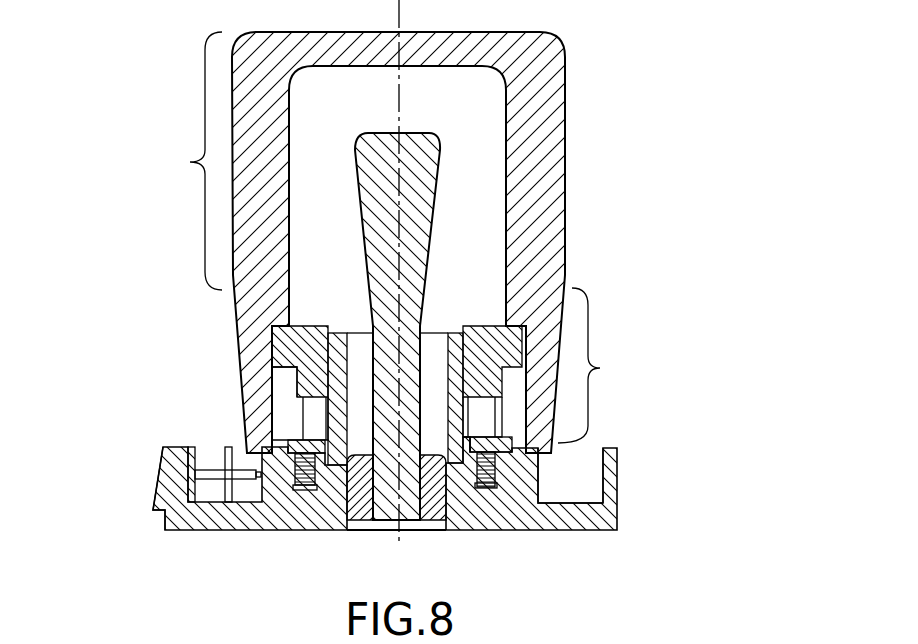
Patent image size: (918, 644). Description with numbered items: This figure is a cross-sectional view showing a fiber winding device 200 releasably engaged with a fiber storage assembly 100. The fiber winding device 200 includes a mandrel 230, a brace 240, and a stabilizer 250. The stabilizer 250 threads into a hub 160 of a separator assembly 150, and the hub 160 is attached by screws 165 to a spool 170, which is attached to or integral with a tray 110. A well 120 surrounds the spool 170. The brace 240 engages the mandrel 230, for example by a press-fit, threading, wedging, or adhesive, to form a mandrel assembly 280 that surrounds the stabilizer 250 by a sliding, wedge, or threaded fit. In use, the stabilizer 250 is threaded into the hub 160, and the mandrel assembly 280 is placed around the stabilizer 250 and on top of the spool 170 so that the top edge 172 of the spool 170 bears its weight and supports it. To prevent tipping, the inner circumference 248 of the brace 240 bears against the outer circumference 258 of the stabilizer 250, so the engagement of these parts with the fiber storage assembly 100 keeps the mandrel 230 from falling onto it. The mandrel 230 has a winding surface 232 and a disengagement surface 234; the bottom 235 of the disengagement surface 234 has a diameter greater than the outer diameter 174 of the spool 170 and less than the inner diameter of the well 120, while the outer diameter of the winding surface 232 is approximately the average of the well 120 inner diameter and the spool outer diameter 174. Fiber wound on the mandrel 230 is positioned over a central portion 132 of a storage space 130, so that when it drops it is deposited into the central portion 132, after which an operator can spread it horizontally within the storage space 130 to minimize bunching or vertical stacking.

The fiber storage assembly 100 is at (612, 537).
The tray 110 is at (152, 502).
The well 120 is at (612, 463).
The storage space 130 is at (203, 507).
The central portion 132 is at (203, 447).
The separator assembly 150 is at (267, 383).
The hub 160 is at (288, 423).
The screws 165 is at (310, 490).
The spool 170 is at (508, 495).
The top edge 172 is at (541, 437).
The outer diameter 174 is at (605, 505).
The fiber winding device 200 is at (650, 158).
The mandrel 230 is at (573, 278).
The winding surface 232 is at (179, 161).
The disengagement surface 234 is at (606, 365).
The bottom 235 is at (238, 438).
The brace 240 is at (538, 330).
The inner circumference 248 is at (323, 323).
The stabilizer 250 is at (472, 418).
The outer circumference 258 is at (318, 356).
The mandrel assembly 280 is at (600, 123).